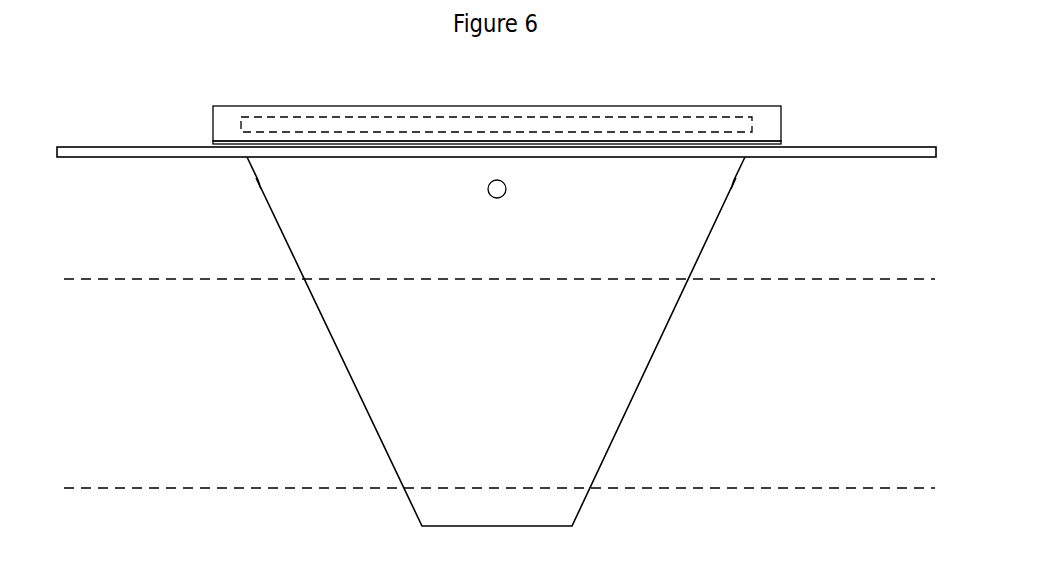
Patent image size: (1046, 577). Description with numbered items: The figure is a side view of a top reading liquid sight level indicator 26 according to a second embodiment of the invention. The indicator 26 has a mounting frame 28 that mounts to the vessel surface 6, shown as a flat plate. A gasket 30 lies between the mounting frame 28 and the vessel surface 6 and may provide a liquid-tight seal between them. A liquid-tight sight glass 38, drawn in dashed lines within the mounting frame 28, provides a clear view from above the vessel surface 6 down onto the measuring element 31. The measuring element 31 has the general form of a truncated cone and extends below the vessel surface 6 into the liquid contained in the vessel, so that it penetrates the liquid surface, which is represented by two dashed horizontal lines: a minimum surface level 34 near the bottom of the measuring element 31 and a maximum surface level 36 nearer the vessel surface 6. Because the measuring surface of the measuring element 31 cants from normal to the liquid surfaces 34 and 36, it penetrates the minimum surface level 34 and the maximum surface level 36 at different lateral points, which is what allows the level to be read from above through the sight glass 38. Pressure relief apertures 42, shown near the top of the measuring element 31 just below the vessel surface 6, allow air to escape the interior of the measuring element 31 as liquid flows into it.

The vessel surface 6 is at (843, 147).
The top reading liquid sight level indicator 26 is at (790, 95).
The mounting frame 28 is at (242, 106).
The gasket 30 is at (212, 143).
The measuring element 31 is at (649, 369).
The minimum surface level 34 is at (778, 488).
The maximum surface level 36 is at (797, 279).
The liquid-tight sight glass 38 is at (293, 117).
The pressure relief aperture 42 is at (259, 184).